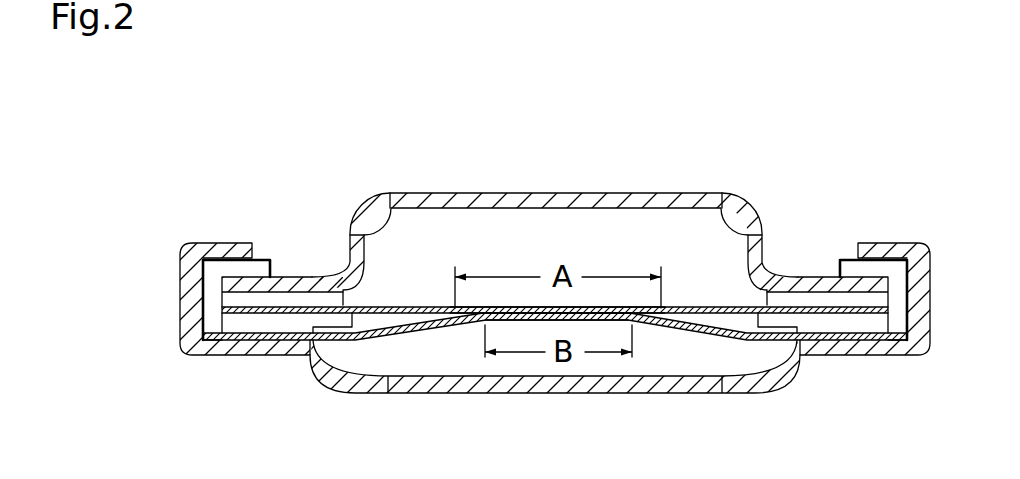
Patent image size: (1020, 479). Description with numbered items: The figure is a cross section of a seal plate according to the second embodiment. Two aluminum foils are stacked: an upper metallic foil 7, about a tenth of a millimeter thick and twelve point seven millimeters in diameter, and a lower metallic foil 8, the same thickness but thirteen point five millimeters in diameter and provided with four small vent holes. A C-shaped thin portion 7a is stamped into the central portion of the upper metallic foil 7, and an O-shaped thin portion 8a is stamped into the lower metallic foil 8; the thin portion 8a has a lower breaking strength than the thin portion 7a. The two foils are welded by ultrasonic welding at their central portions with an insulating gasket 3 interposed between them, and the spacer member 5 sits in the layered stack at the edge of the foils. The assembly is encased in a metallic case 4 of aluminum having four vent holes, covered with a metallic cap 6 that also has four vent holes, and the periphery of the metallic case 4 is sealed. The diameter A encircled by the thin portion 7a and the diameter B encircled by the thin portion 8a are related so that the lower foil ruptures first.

The insulating gasket 3 is at (857, 323).
The metallic case 4 is at (670, 387).
The spacer frame 5 is at (784, 291).
The metallic cap 6 is at (510, 193).
The upper metallic foil 7 is at (386, 303).
The thin portion of upper metallic foil 7a is at (453, 307).
The lower metallic foil 8 is at (391, 338).
The thin portion of lower metallic foil 8a is at (485, 317).